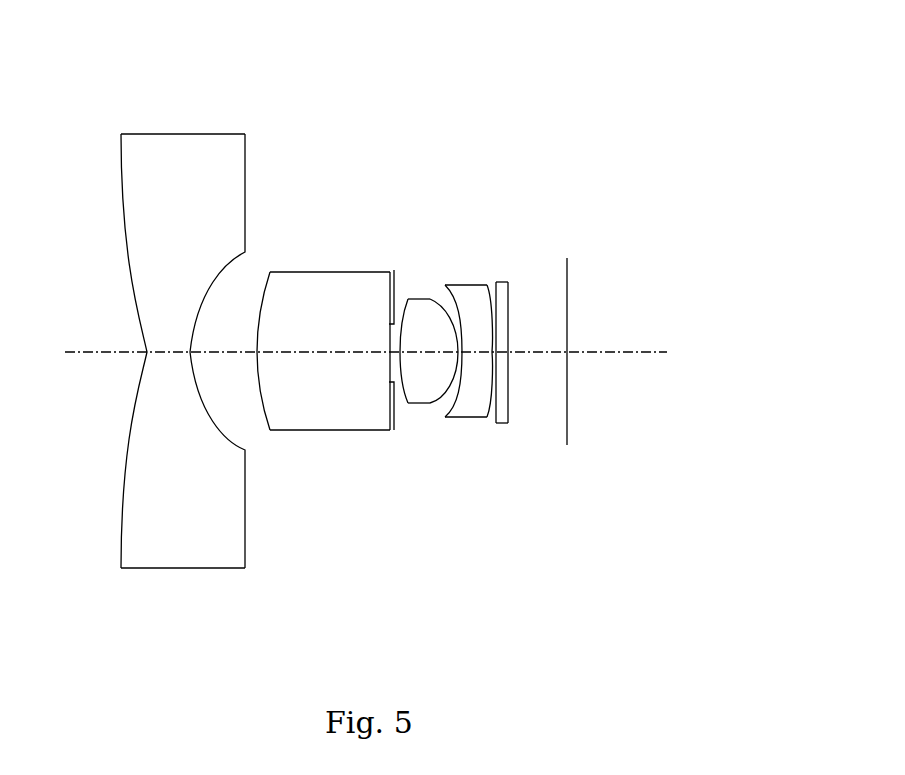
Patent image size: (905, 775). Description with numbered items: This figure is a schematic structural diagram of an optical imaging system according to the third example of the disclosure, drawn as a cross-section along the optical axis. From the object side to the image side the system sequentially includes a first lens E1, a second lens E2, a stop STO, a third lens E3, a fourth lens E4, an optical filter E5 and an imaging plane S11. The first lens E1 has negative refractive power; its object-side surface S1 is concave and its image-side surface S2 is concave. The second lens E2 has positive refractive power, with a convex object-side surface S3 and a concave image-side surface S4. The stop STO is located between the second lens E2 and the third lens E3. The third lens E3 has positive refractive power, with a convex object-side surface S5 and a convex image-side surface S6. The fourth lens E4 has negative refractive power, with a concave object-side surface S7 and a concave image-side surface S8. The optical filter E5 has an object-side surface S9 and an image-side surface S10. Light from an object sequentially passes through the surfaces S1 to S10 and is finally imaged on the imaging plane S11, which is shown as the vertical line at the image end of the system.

The first lens E1 is at (137, 348).
The second lens E2 is at (263, 348).
The stop STO is at (362, 223).
The third lens E3 is at (371, 348).
The fourth lens E4 is at (457, 348).
The optical filter E5 is at (563, 348).
The object-side surface of the first lens S1 is at (147, 352).
The image-side surface of the first lens S2 is at (190, 352).
The object-side surface of the second lens S3 is at (257, 352).
The image-side surface of the second lens S4 is at (390, 352).
The object-side surface of the third lens S5 is at (400, 352).
The image-side surface of the third lens S6 is at (458, 352).
The object-side surface of the fourth lens S7 is at (462, 352).
The image-side surface of the fourth lens S8 is at (492, 352).
The object-side surface of the optical filter S9 is at (496, 352).
The image-side surface of the optical filter S10 is at (508, 352).
The imaging plane S11 is at (567, 352).